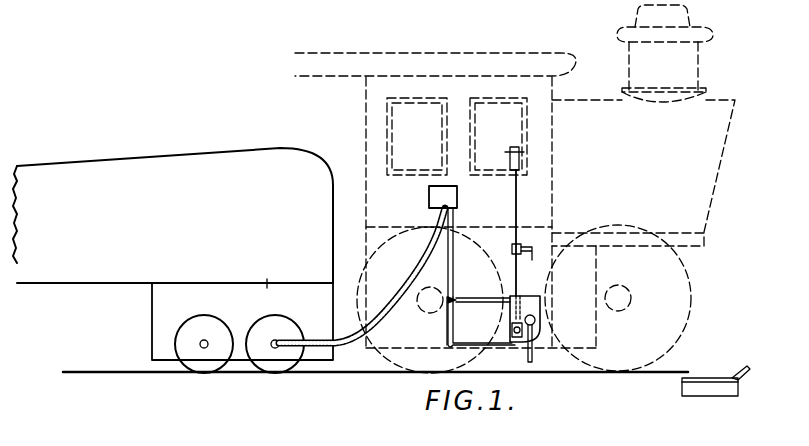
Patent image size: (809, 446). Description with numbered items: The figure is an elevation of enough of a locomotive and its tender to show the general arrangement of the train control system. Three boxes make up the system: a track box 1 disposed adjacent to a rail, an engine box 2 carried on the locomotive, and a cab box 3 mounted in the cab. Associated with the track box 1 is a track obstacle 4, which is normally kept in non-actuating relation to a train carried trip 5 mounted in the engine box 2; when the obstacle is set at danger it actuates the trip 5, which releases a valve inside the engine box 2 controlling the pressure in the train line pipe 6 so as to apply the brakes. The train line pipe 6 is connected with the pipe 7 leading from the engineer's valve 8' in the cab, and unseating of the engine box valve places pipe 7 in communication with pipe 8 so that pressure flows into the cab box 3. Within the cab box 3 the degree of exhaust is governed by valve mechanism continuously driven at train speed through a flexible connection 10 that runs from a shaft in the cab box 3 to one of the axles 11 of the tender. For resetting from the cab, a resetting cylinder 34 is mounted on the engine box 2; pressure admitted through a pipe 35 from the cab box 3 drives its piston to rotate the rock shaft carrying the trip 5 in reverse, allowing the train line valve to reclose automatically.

The track box 1 is at (725, 388).
The engine box 2 is at (535, 310).
The cab box 3 is at (429, 196).
The track obstacle 4 is at (748, 366).
The trip 5 is at (537, 345).
The train line pipe 6 is at (523, 252).
The pipe 7 is at (518, 205).
The pipe 8 is at (481, 277).
The engineer's valve 8' is at (503, 156).
The flexible connection 10 is at (345, 340).
The axle 11 is at (273, 350).
The resetting cylinder 34 is at (511, 333).
The pipe 35 is at (447, 321).